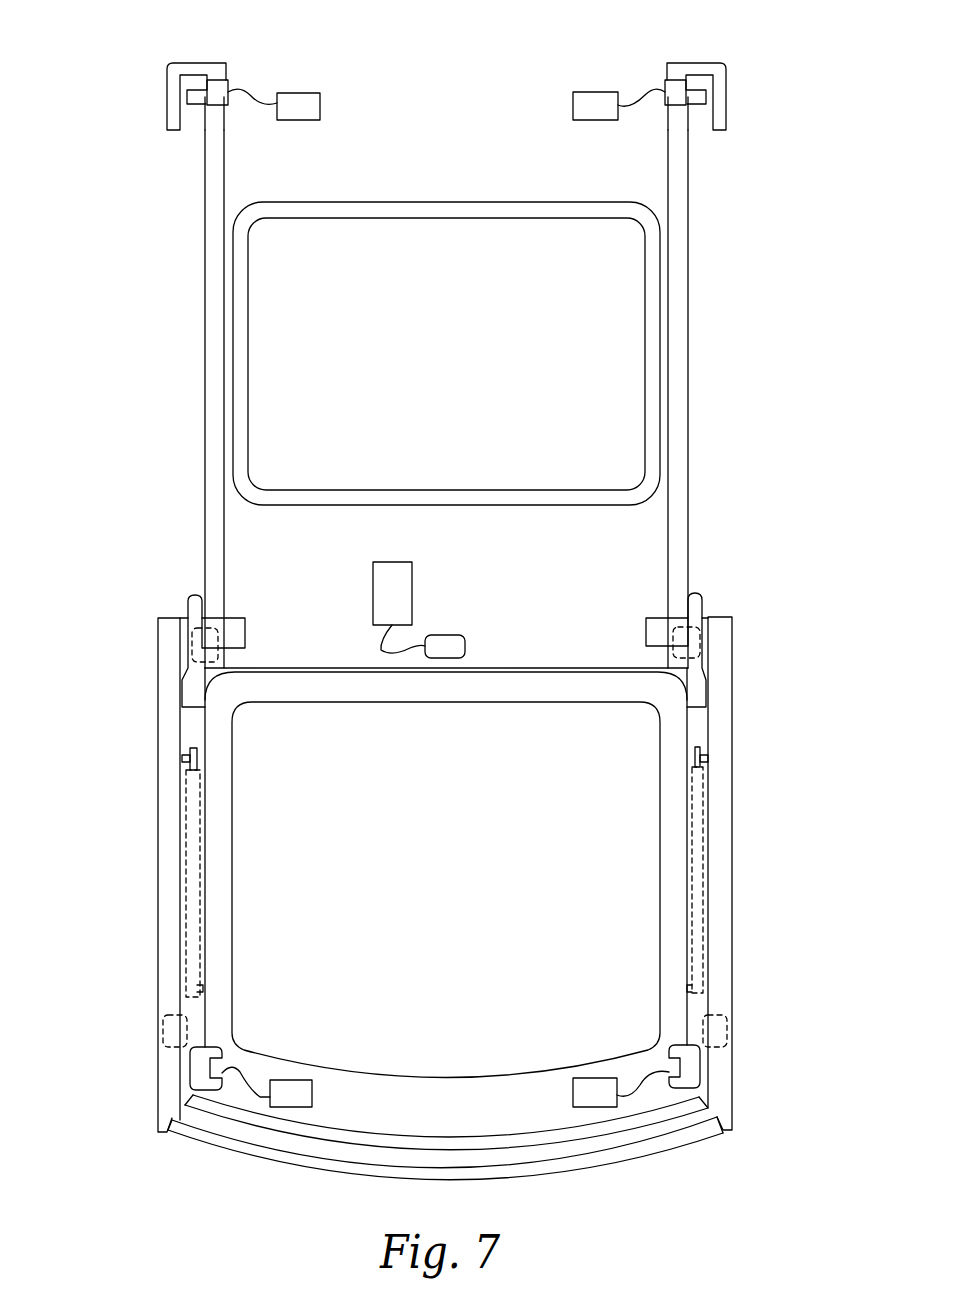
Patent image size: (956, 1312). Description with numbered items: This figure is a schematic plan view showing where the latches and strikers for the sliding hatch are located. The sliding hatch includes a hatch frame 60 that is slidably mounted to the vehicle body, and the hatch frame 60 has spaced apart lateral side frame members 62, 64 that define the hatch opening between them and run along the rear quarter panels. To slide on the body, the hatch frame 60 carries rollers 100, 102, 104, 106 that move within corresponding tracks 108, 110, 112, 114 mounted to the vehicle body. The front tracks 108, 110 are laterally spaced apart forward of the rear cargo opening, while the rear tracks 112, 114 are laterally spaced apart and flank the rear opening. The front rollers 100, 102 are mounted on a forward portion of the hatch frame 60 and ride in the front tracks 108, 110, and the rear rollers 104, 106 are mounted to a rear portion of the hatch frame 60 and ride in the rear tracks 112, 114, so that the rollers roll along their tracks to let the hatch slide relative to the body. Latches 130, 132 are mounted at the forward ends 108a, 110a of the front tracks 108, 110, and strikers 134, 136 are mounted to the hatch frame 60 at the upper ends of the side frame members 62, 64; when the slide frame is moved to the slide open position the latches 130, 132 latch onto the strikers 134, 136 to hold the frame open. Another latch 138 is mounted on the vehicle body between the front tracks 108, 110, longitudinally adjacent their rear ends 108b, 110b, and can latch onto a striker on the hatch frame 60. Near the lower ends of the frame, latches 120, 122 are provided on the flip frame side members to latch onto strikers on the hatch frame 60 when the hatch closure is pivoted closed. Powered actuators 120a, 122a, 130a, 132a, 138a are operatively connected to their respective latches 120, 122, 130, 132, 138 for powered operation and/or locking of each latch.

The hatch frame 60 is at (212, 831).
The lateral side frame member 62 is at (195, 723).
The lateral side frame member 64 is at (698, 730).
The front roller 100 is at (218, 640).
The front roller 102 is at (675, 633).
The rear roller 104 is at (160, 1035).
The rear roller 106 is at (720, 1035).
The front track 108 is at (203, 292).
The forward end of front track 108a is at (215, 117).
The rear end of front track 108b is at (225, 660).
The front track 110 is at (690, 290).
The forward end of front track 110a is at (678, 117).
The rear end of front track 110b is at (668, 658).
The rear track 112 is at (165, 940).
The rear track 114 is at (723, 918).
The latch 120 is at (195, 1072).
The powered actuator 120a is at (290, 1092).
The latch 122 is at (695, 1068).
The powered actuator 122a is at (600, 1090).
The latch 130 is at (194, 66).
The powered actuator 130a is at (300, 100).
The latch 132 is at (690, 63).
The powered actuator 132a is at (592, 100).
The striker 134 is at (193, 602).
The striker 136 is at (697, 603).
The latch 138 is at (443, 643).
The powered actuator 138a is at (402, 583).